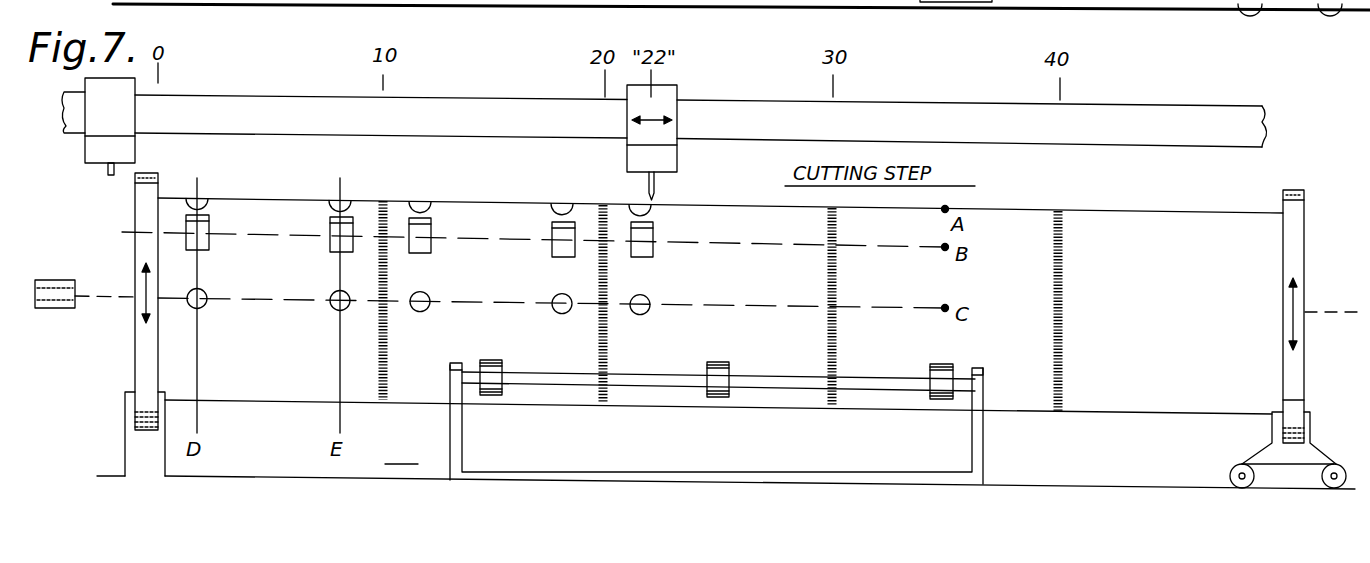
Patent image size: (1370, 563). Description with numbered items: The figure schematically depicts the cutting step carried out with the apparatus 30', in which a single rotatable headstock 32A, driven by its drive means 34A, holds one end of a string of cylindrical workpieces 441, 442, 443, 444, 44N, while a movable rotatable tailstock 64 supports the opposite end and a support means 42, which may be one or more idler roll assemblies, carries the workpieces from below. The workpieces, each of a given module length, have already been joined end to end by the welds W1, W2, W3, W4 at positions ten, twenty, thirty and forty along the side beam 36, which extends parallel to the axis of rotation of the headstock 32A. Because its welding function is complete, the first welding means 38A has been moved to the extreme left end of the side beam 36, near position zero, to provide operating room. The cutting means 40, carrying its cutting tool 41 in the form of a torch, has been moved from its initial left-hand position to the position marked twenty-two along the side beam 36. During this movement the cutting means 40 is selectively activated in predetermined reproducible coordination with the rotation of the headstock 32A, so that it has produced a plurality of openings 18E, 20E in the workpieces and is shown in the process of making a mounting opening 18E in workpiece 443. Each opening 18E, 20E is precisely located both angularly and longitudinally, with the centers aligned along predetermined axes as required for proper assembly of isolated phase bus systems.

The side beam 36 is at (463, 128).
The first welding means 38A is at (115, 123).
The cutting means 40 is at (670, 96).
The cutting tool 41 is at (657, 183).
The rotatable headstock 32A is at (134, 257).
The drive means 34A is at (60, 310).
The mounting opening 18E is at (205, 205).
The opening 20E is at (209, 237).
The first weld W1 is at (388, 347).
The second weld W2 is at (608, 349).
The third weld W3 is at (837, 350).
The fourth weld W4 is at (1063, 356).
The first cylindrical workpiece 441 is at (248, 388).
The second cylindrical workpiece 442 is at (537, 397).
The third cylindrical workpiece 443 is at (760, 400).
The fourth cylindrical workpiece 444 is at (1030, 402).
The nth cylindrical workpiece 44N is at (1178, 400).
The support means 42 is at (983, 452).
The apparatus 30' is at (402, 451).
The movable rotatable tailstock 64 is at (1305, 250).